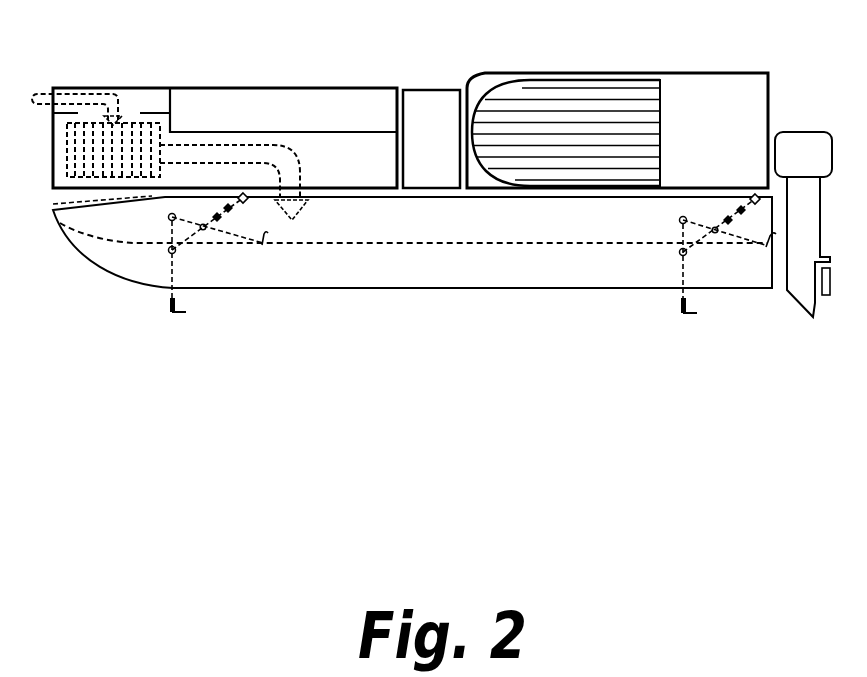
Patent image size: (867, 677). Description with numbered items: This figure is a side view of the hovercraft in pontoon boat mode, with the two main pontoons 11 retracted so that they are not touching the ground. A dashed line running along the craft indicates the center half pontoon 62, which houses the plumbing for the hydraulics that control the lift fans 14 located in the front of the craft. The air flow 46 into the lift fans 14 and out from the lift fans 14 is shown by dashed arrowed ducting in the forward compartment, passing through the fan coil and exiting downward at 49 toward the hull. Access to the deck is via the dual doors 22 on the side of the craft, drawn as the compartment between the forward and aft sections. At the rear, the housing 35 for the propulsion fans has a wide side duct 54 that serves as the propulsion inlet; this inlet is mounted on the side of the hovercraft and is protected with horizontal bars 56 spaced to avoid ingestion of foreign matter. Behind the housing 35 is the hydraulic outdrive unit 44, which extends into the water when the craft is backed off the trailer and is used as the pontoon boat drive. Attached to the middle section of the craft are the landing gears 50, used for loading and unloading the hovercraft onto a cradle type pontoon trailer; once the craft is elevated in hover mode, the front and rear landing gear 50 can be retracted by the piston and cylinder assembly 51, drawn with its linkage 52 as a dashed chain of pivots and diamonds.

The pontoons 11 is at (72, 253).
The lift fans 14 is at (105, 172).
The dual doors 22 is at (420, 188).
The housing 35 is at (683, 73).
The outdrive unit 44 is at (802, 308).
The air flow 46 is at (38, 105).
The outlet pipe with arrow 49 is at (290, 222).
The landing gear 50 is at (182, 315).
The piston and cylinder assembly 51 is at (213, 233).
The diamond chain link 52 is at (240, 243).
The side duct 54 is at (515, 172).
The horizontal bars 56 is at (613, 143).
The center half pontoon 62 is at (370, 245).